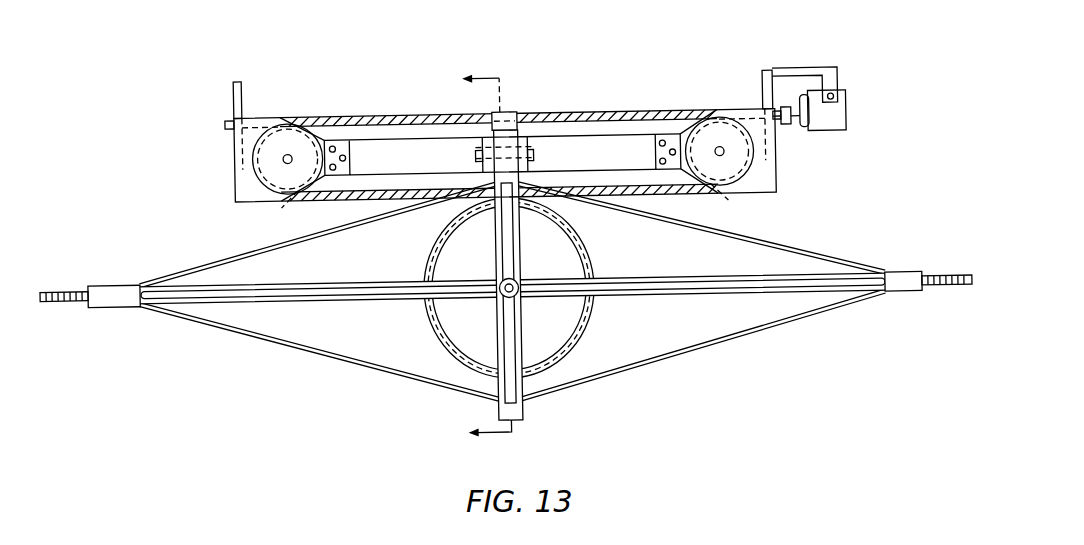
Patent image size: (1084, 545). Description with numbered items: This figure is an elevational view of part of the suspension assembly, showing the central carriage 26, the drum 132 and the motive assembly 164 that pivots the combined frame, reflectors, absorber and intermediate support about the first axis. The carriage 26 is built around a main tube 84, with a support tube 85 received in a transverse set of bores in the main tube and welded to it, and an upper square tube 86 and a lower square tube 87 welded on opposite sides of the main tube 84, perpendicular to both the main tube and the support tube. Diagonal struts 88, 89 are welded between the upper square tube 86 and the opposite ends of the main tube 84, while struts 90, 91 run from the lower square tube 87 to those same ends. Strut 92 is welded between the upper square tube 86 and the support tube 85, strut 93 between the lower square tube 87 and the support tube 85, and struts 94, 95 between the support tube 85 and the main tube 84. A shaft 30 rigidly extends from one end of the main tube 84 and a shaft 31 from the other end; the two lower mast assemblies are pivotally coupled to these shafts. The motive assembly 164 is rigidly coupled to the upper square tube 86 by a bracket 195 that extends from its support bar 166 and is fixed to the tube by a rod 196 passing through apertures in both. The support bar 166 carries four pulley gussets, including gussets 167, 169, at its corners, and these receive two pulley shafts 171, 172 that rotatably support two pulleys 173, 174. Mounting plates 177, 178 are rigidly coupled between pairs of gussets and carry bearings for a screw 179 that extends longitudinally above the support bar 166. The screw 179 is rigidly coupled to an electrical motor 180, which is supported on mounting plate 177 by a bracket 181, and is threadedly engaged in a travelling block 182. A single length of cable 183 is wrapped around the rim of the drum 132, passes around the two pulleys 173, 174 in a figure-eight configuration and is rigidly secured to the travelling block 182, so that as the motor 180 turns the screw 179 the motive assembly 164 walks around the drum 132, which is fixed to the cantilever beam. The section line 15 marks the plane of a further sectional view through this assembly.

The section line 15- 15 is at (505, 259).
The central carriage 26 is at (648, 302).
The shaft 30 is at (53, 292).
The shaft 31 is at (950, 275).
The main tube 84 is at (626, 278).
The support tube 85 is at (503, 292).
The upper square tube 86 is at (527, 232).
The lower square tube 87 is at (526, 386).
The diagonal strut 88 is at (373, 222).
The diagonal strut 89 is at (676, 235).
The strut 90 is at (412, 388).
The strut 91 is at (652, 372).
The strut 92 is at (500, 238).
The strut 93 is at (497, 380).
The strut 94 is at (762, 292).
The strut 95 is at (377, 298).
The drum 132 is at (576, 225).
The motive assembly 164 is at (588, 92).
The support bar 166 is at (390, 136).
The pulley gusset 167 is at (757, 108).
The pulley gusset 169 is at (252, 117).
The pulley shaft 171 is at (727, 151).
The pulley shaft 172 is at (284, 160).
The pulley 173 is at (752, 193).
The pulley 174 is at (270, 199).
The mounting plate 177 is at (772, 72).
The mounting plate 178 is at (237, 96).
The screw 179 is at (228, 121).
The electrical motor 180 is at (850, 116).
The bracket 181 is at (826, 76).
The travelling block 182 is at (520, 112).
The cable 183 is at (340, 112).
The bracket 195 is at (478, 164).
The rod 196 is at (536, 152).